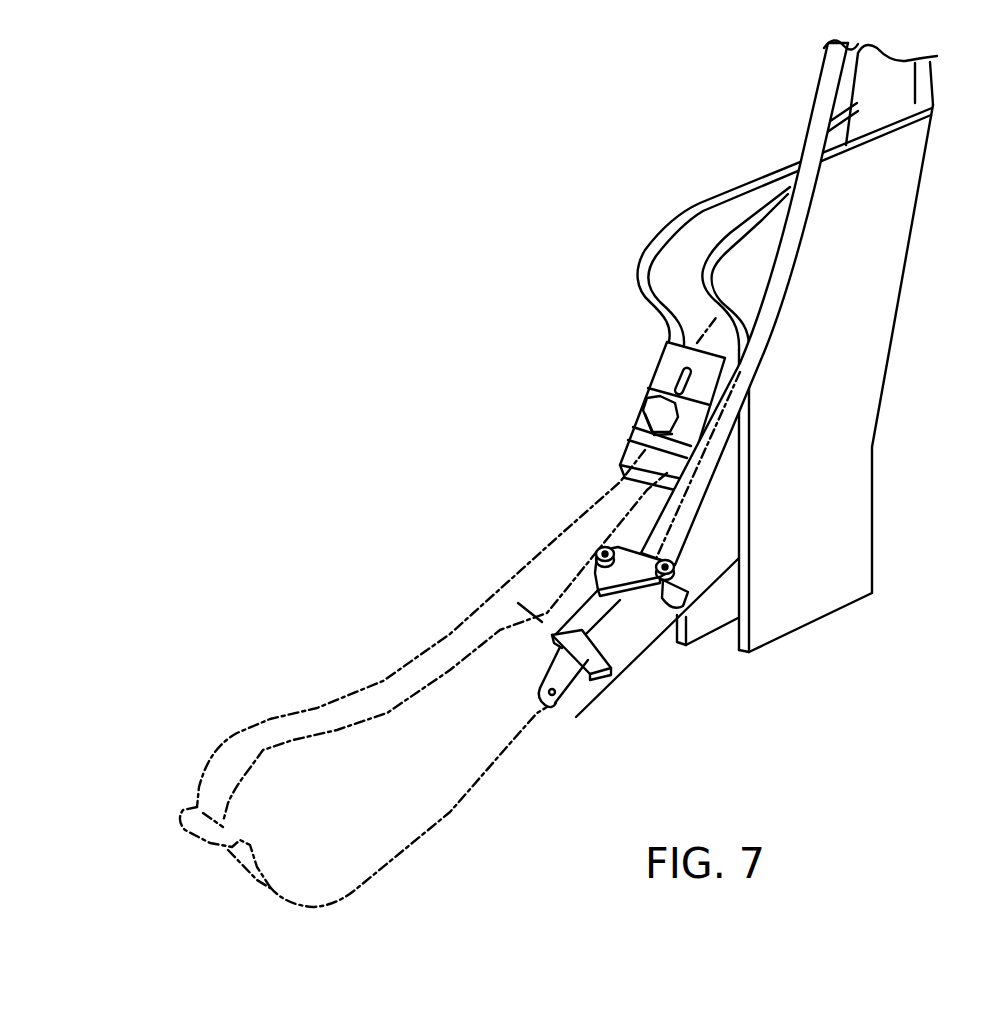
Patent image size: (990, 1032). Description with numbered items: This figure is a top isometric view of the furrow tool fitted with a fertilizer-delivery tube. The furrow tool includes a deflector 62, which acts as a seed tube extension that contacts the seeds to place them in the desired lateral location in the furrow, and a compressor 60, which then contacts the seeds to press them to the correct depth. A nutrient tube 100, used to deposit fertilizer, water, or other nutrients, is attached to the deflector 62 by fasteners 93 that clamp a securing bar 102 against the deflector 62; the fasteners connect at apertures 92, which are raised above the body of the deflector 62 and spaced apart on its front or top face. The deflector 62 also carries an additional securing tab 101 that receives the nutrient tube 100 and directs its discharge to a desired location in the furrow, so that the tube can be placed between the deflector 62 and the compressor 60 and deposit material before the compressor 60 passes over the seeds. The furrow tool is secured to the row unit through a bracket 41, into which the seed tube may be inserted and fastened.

The bracket 41 is at (855, 388).
The compressor 60 is at (290, 765).
The deflector 62 is at (635, 638).
The apertures 92 is at (677, 572).
The fasteners 93 is at (607, 550).
The nutrient tube 100 is at (552, 707).
The securing tab 101 is at (635, 638).
The securing bar 102 is at (627, 563).